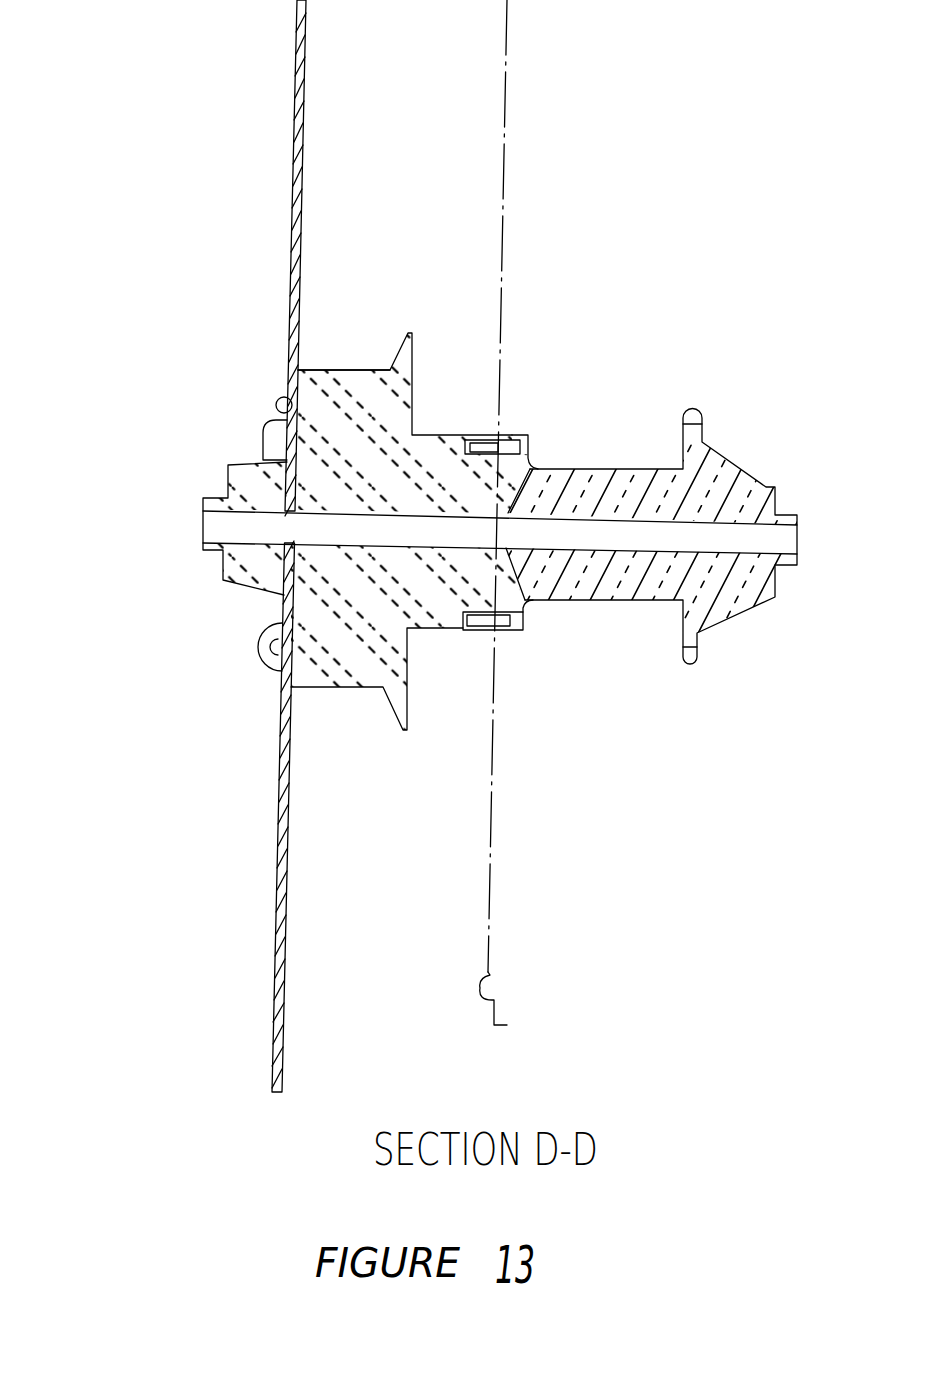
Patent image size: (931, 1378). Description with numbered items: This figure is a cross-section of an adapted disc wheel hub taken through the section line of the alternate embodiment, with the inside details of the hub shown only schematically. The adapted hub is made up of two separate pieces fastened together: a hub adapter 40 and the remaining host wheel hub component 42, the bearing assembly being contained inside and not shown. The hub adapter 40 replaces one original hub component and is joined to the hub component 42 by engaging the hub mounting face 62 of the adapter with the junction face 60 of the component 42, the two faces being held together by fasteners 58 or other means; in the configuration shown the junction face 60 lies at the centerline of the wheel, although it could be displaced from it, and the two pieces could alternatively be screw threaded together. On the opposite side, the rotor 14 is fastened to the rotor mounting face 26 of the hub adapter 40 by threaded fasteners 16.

The rotor 14 is at (202, 546).
The threaded fasteners 16 is at (196, 556).
The rotor mounting face 26 is at (353, 270).
The hub adapter 40 is at (352, 346).
The hub component 42 is at (600, 458).
The fasteners 58 is at (548, 404).
The junction face 60 is at (497, 562).
The hub mounting face 62 is at (500, 562).